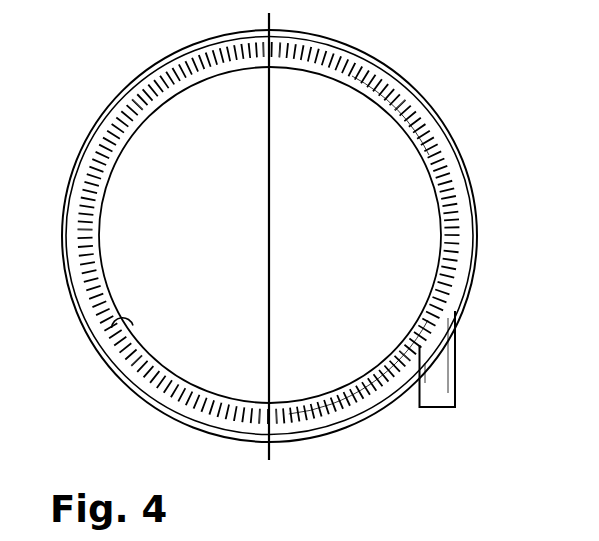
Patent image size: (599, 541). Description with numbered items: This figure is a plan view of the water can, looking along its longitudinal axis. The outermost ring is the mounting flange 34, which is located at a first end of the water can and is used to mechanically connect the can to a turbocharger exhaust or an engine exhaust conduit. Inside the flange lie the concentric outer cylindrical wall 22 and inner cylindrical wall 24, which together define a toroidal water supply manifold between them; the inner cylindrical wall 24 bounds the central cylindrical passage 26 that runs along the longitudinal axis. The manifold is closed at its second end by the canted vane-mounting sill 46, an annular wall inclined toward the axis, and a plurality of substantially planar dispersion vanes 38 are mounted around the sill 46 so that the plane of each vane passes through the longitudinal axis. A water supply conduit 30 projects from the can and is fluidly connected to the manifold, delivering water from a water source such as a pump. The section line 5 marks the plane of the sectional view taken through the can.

The section line 5 is at (269, 13).
The outer cylindrical wall 22 is at (120, 369).
The inner cylindrical wall 24 is at (110, 318).
The central cylindrical passage 26 is at (203, 192).
The water supply conduit 30 is at (450, 361).
The mounting flange 34 is at (113, 97).
The dispersion vanes 38 is at (400, 99).
The canted vane-mounting sill 46 is at (457, 212).